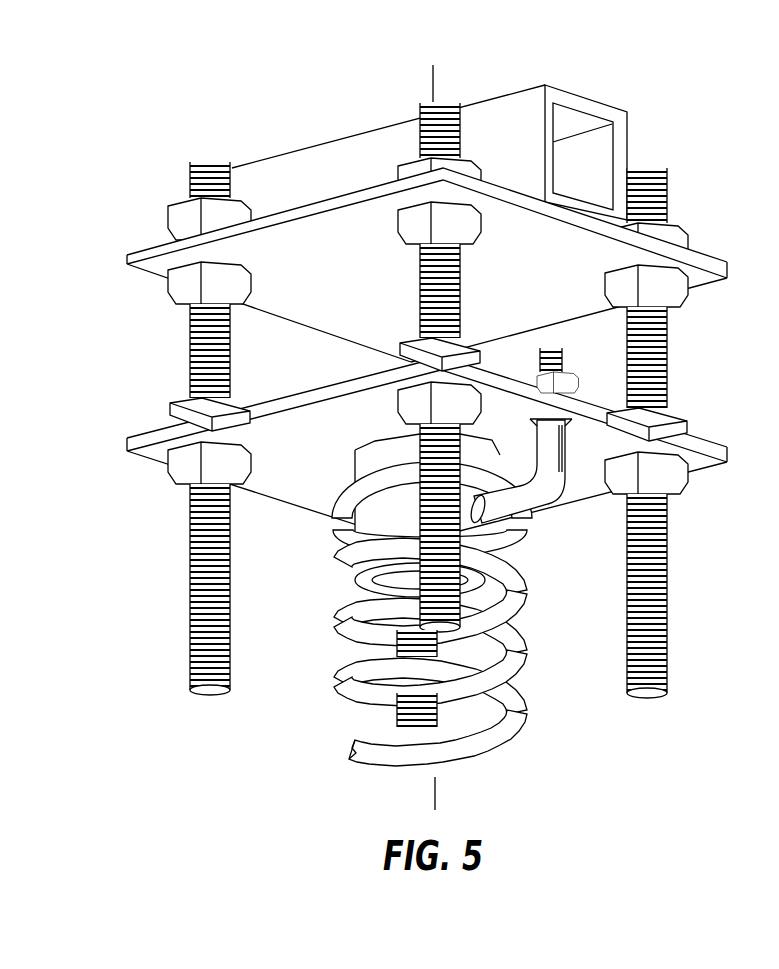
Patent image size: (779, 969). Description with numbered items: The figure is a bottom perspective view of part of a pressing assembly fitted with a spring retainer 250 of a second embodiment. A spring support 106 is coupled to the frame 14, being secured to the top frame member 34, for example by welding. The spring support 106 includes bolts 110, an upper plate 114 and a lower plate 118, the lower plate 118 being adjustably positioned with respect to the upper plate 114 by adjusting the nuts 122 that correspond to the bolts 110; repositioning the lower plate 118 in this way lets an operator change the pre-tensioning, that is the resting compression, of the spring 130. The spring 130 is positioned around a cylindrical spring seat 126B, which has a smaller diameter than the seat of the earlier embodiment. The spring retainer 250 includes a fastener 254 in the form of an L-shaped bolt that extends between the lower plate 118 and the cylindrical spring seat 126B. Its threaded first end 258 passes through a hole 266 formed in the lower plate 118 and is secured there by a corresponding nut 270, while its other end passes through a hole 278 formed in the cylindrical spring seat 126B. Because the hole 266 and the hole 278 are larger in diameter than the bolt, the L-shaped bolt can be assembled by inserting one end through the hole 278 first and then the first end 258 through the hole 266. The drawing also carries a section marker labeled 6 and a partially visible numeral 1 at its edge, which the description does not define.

The frame 14 is at (429, 152).
The top frame member 34 is at (298, 176).
The upper plate 114 is at (127, 262).
The lower plate 118 is at (127, 443).
The bolts 110 is at (192, 350).
The nuts 122 is at (168, 412).
The spring support 106 is at (156, 519).
The cylindrical spring seat 126B is at (352, 522).
The spring 130 is at (334, 657).
The hole 278 is at (490, 567).
The spring retainer 250 is at (615, 438).
The fastener 254 is at (543, 482).
The first end 258 is at (555, 348).
The nut 270 is at (574, 384).
The hole 266 is at (573, 426).
The section line for FIG. 6 is at (420, 78).
The partial numeral 1 is at (774, 570).